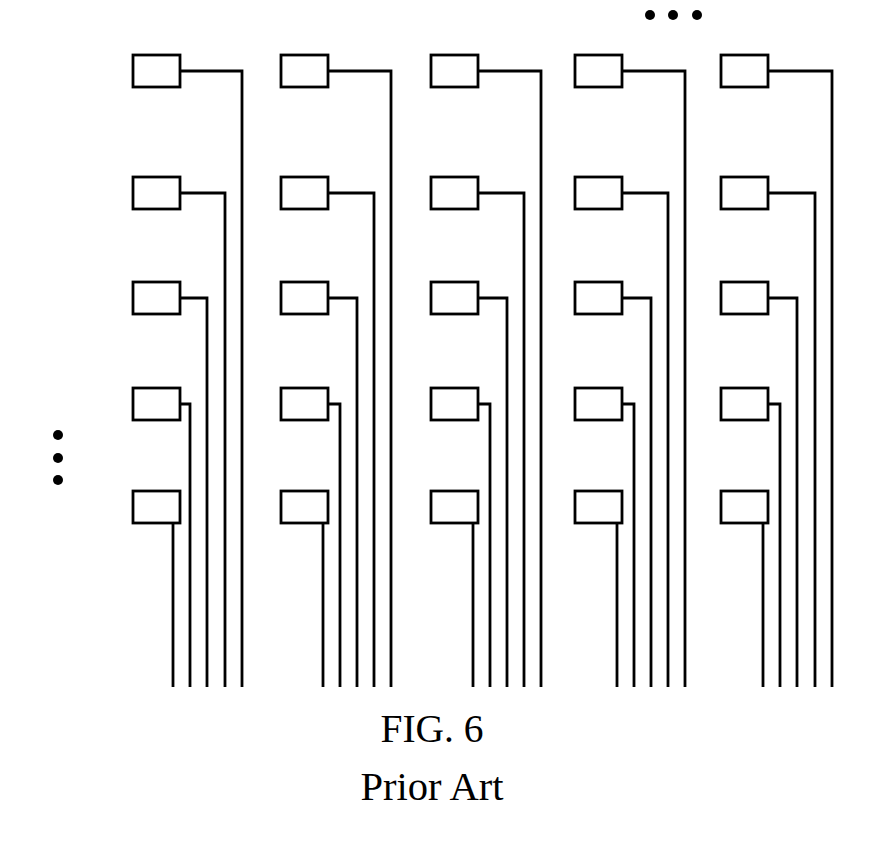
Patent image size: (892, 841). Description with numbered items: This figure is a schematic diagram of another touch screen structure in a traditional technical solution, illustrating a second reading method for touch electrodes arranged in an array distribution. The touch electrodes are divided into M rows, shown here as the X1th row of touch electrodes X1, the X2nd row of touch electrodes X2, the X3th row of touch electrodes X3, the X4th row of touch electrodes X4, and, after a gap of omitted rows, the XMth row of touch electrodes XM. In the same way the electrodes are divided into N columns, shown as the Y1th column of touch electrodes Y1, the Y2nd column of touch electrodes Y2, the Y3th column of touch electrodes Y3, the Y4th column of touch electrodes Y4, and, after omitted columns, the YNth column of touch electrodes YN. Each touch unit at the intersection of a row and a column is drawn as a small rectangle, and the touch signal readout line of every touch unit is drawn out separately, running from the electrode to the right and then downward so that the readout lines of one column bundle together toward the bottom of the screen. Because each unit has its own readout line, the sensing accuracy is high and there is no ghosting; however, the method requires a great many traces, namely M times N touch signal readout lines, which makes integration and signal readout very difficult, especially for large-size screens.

The X1th row of touch electrodes X1 is at (405, 71).
The X2nd row of touch electrodes X2 is at (405, 193).
The X3th row of touch electrodes X3 is at (405, 298).
The X4th row of touch electrodes X4 is at (405, 404).
The XMth row of touch electrodes XM is at (403, 507).
The Y1th column of touch electrodes Y1 is at (190, 345).
The Y2nd column of touch electrodes Y2 is at (339, 345).
The Y3th column of touch electrodes Y3 is at (489, 345).
The Y4th column of touch electrodes Y4 is at (633, 345).
The YNth column of touch electrodes YN is at (778, 345).